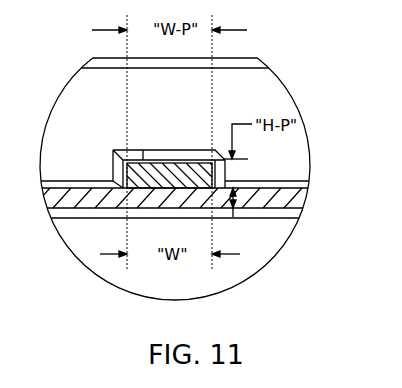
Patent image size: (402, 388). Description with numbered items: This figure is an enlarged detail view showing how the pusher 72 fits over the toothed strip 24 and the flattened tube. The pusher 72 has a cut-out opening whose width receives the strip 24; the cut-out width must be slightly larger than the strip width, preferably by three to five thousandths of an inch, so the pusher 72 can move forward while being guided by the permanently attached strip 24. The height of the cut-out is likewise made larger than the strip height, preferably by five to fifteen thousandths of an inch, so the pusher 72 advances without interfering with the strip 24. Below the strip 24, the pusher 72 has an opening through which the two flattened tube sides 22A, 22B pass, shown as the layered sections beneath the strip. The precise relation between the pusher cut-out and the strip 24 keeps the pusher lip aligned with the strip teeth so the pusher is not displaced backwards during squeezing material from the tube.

The pusher 72 is at (92, 83).
The strip 24 is at (196, 150).
The flattened tube side 22A is at (283, 188).
The flattened tube side 22B is at (282, 207).